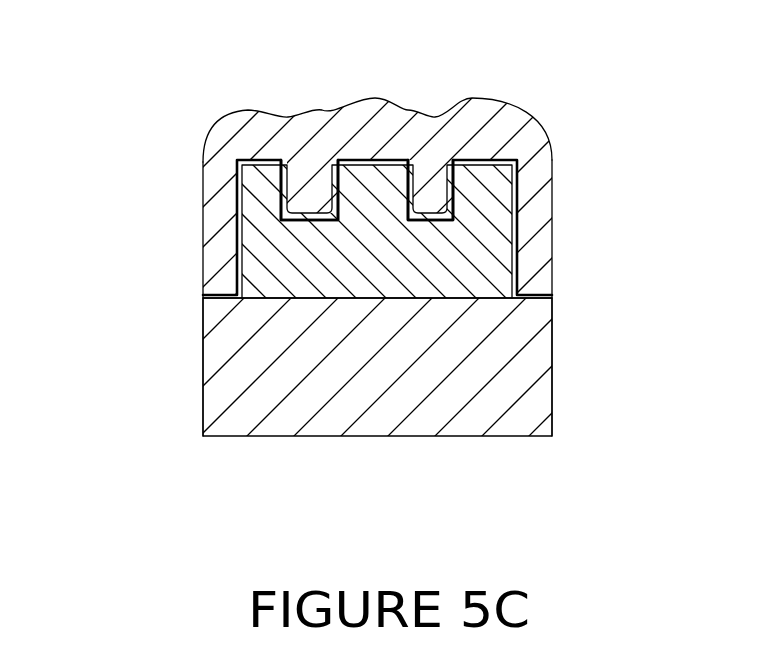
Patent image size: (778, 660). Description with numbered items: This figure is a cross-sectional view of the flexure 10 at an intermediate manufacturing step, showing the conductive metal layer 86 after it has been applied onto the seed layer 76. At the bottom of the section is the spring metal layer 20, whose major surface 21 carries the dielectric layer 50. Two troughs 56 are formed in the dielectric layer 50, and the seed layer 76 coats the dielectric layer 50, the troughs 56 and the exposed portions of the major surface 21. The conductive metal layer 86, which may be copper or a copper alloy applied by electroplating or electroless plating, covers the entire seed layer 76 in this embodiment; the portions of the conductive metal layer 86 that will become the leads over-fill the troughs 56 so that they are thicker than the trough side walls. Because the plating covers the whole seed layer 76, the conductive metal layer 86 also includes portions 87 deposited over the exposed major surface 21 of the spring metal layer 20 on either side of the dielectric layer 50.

The flexure 10 is at (226, 462).
The spring metal layer 20 is at (290, 437).
The major surface of the spring metal layer 21 is at (220, 297).
The dielectric layer 50 is at (392, 288).
The troughs 56 is at (305, 180).
The seed layer 76 is at (377, 160).
The conductive metal layer 86 is at (334, 108).
The portions of the conductive metal layer 87 is at (225, 182).